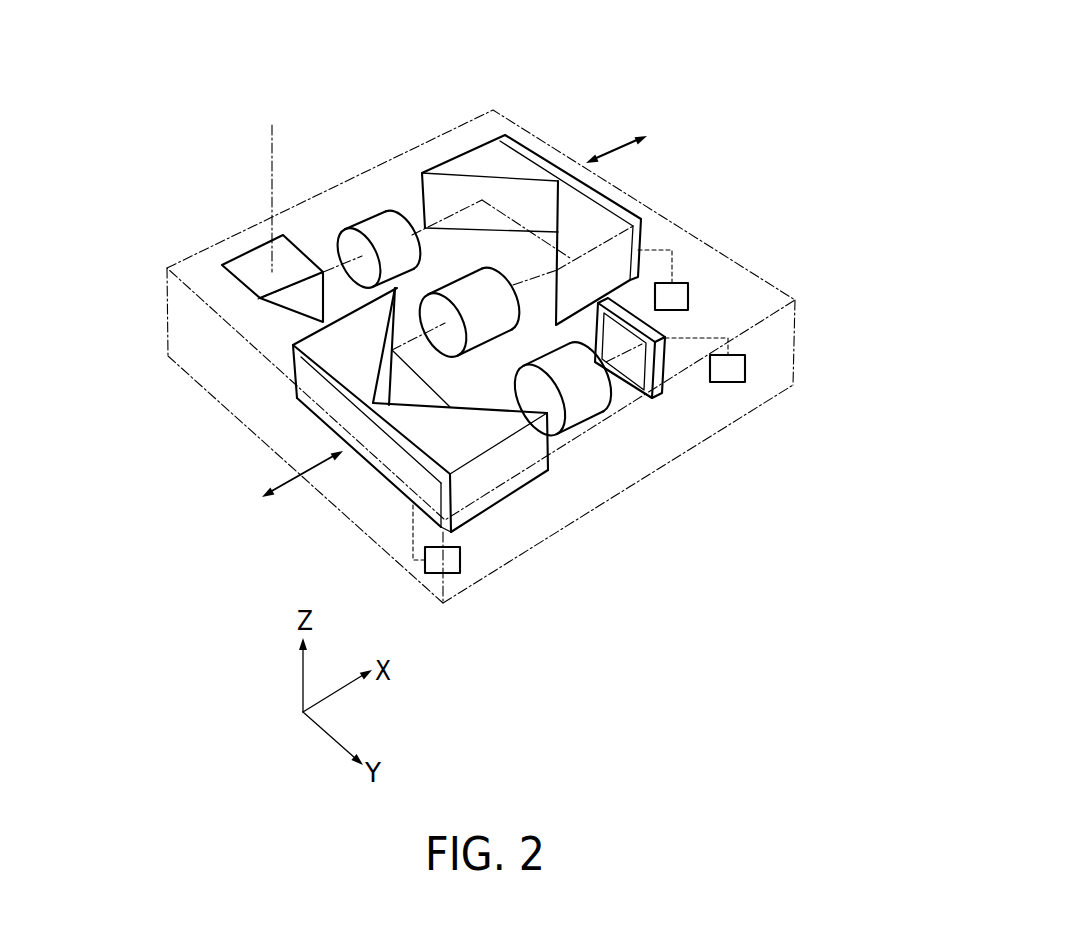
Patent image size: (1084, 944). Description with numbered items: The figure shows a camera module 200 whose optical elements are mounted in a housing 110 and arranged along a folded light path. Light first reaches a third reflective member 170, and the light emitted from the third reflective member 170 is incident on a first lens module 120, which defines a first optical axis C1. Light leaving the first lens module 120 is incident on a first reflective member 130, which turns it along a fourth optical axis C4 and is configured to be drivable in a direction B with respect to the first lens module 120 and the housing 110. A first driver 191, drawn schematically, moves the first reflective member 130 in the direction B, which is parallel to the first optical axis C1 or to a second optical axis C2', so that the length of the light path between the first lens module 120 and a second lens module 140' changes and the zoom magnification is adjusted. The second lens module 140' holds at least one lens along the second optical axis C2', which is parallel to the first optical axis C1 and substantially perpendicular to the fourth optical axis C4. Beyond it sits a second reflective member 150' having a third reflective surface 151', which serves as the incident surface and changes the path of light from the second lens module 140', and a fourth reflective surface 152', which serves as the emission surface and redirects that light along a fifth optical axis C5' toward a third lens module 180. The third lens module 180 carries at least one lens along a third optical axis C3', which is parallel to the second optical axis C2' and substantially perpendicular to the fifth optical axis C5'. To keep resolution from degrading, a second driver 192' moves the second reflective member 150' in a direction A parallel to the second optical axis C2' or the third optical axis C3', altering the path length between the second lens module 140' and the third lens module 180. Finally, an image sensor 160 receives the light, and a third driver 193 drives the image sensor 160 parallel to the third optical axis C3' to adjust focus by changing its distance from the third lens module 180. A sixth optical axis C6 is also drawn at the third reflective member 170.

The camera module 200 is at (257, 43).
The housing 110 is at (474, 356).
The first lens module 120 is at (370, 206).
The first reflective member 130 is at (531, 196).
The second lens module 140' is at (506, 231).
The second reflective member 150' is at (438, 445).
The third reflective surface 151' is at (276, 383).
The fourth reflective surface 152' is at (446, 472).
The image sensor 160 is at (674, 397).
The third reflective member 170 is at (263, 240).
The third lens module 180 is at (589, 443).
The first driver 191 is at (713, 264).
The second driver 192' is at (428, 583).
The third driver 193 is at (757, 372).
The first optical axis C1 is at (414, 215).
The second optical axis C2' is at (641, 371).
The third optical axis C3' is at (650, 443).
The fourth optical axis C4 is at (537, 142).
The fifth optical axis C5' is at (365, 478).
The sixth optical axis C6 is at (297, 172).
The direction A is at (302, 467).
The direction B is at (616, 141).